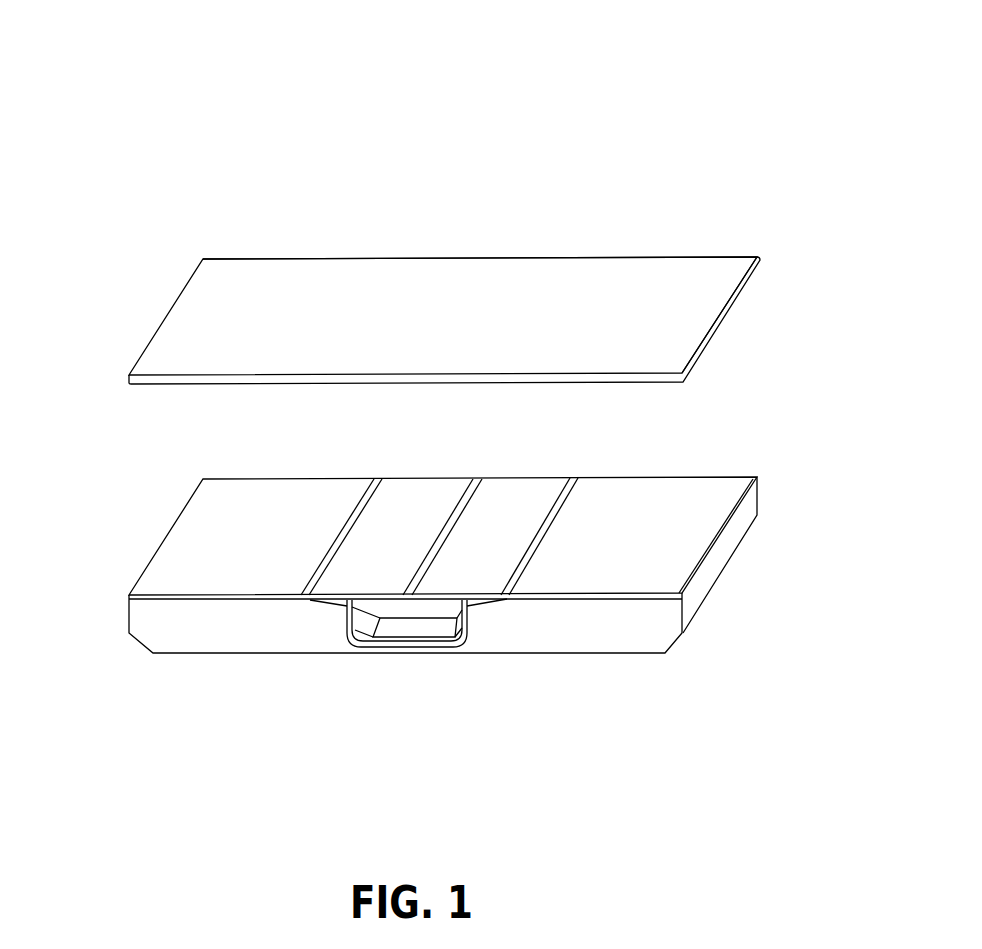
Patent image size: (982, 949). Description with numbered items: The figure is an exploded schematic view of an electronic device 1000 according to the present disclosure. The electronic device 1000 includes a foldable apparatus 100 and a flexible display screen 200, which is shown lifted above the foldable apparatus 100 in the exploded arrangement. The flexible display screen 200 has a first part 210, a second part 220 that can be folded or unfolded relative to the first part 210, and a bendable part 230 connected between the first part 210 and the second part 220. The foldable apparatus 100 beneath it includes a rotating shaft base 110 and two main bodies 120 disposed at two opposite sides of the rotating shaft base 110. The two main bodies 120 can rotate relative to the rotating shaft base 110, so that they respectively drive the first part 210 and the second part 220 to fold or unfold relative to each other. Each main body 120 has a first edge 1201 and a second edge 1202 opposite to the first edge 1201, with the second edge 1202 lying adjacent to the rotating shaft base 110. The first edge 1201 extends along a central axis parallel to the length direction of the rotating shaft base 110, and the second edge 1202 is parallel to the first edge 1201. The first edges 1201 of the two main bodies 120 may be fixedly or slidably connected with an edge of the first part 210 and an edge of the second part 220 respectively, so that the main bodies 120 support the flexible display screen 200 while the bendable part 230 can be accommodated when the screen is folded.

The electronic device 1000 is at (592, 72).
The flexible display screen 200 is at (723, 213).
The first part 210 is at (256, 298).
The second part 220 is at (680, 287).
The bendable part 230 is at (442, 277).
The foldable apparatus 100 is at (475, 712).
The first edge 1201 is at (150, 550).
The second edge 1202 is at (438, 543).
The main body 120 is at (223, 628).
The rotating shaft base 110 is at (415, 627).